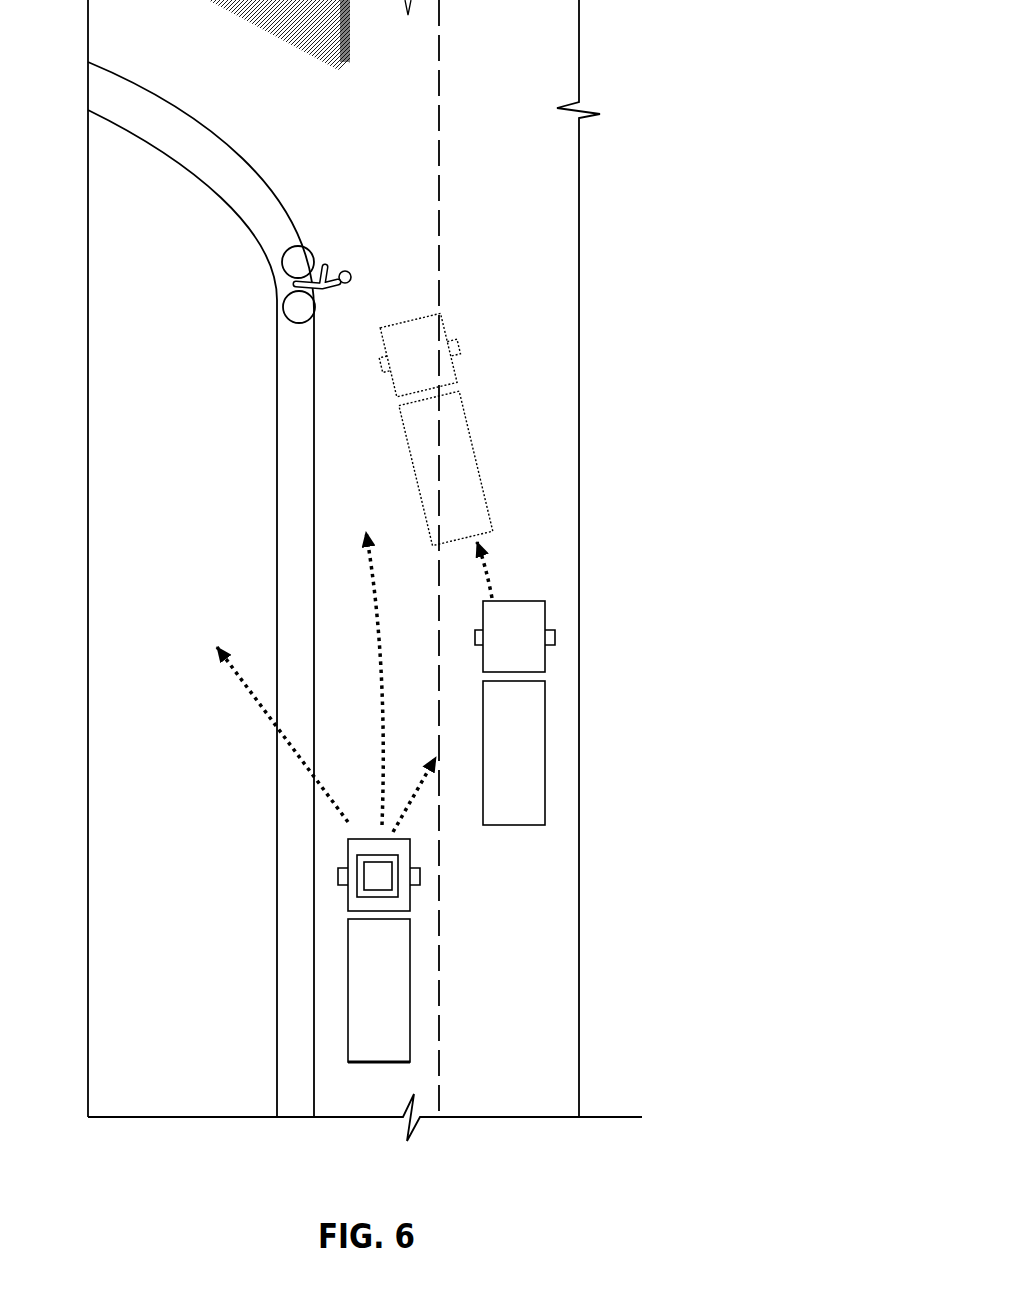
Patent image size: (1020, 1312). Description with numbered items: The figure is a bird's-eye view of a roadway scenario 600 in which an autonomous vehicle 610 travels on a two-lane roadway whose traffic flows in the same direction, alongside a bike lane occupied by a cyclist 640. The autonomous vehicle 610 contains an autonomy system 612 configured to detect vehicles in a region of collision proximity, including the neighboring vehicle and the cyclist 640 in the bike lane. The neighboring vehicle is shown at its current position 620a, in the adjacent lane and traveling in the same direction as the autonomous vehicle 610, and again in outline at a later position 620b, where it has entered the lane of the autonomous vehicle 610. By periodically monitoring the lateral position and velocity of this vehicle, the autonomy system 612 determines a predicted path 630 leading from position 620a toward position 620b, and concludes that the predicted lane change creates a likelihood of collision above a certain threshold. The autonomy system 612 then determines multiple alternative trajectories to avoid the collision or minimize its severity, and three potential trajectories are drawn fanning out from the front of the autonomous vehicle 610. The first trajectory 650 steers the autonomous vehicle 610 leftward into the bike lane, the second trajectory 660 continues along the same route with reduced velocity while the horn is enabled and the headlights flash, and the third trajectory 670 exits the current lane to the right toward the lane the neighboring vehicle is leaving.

The roadway scenario 600 is at (690, 1040).
The autonomous vehicle 610 is at (439, 950).
The autonomy system 612 is at (393, 895).
The position of vehicle 620a is at (547, 703).
The position of vehicle 620b is at (480, 482).
The predicted path 630 is at (490, 583).
The cyclist 640 is at (282, 293).
The trajectory 650 is at (269, 734).
The trajectory 660 is at (347, 678).
The trajectory 670 is at (397, 820).